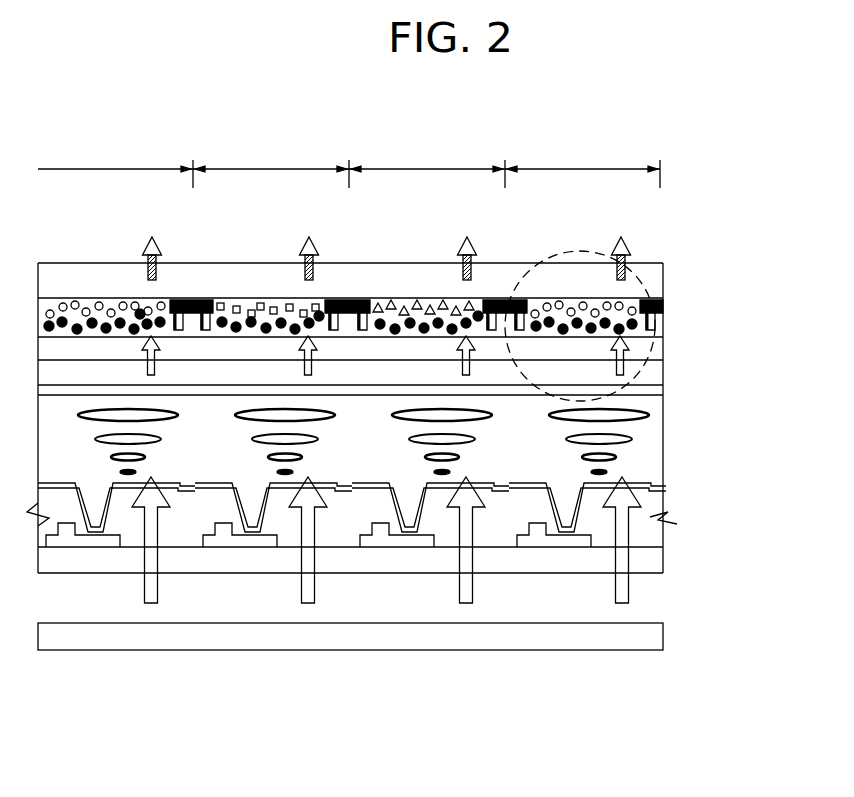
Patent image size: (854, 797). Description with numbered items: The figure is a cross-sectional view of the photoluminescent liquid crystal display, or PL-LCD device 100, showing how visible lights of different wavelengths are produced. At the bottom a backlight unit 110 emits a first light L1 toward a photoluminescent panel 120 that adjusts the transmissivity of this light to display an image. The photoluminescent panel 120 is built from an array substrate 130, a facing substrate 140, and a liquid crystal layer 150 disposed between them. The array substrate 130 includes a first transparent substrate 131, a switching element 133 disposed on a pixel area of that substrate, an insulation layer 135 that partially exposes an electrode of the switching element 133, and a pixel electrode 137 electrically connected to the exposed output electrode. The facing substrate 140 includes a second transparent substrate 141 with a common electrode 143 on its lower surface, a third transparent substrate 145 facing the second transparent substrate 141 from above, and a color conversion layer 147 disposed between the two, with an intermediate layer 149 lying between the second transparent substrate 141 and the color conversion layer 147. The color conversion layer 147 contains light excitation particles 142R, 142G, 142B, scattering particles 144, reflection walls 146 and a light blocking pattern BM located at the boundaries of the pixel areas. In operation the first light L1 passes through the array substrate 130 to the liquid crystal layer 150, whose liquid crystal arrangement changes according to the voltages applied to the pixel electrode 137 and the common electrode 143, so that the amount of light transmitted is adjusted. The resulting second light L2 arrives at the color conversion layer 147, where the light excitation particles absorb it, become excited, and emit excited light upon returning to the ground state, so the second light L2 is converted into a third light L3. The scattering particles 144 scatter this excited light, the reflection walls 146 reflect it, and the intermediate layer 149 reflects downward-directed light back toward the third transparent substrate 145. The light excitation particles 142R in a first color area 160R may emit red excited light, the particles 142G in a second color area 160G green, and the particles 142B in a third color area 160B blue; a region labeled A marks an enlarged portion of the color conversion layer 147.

The PL-LCD device 100 is at (643, 132).
The backlight unit 110 is at (663, 640).
The photoluminescent panel 120 is at (790, 323).
The array substrate 130 is at (739, 455).
The first transparent substrate 131 is at (663, 569).
The switching element 133 is at (591, 536).
The insulation layer 135 is at (663, 504).
The pixel electrode 137 is at (648, 487).
The facing substrate 140 is at (739, 267).
The second transparent substrate 141 is at (663, 373).
The common electrode 143 is at (663, 395).
The scattering particle 144 is at (128, 312).
The third transparent substrate 145 is at (663, 279).
The reflection wall 146 is at (663, 327).
The color conversion layer 147 is at (663, 313).
The intermediate layer 149 is at (663, 350).
The liquid crystal layer 150 is at (663, 440).
The light excitation particle 142R is at (546, 305).
The light excitation particle 142G is at (233, 305).
The light excitation particle 142B is at (417, 305).
The first color area 160R is at (349, 165).
The second color area 160G is at (271, 165).
The third color area 160B is at (427, 165).
The light blocking pattern BM is at (502, 300).
The enlarged region A is at (592, 250).
The first light L1 is at (392, 544).
The second light L2 is at (396, 362).
The third light L3 is at (398, 255).